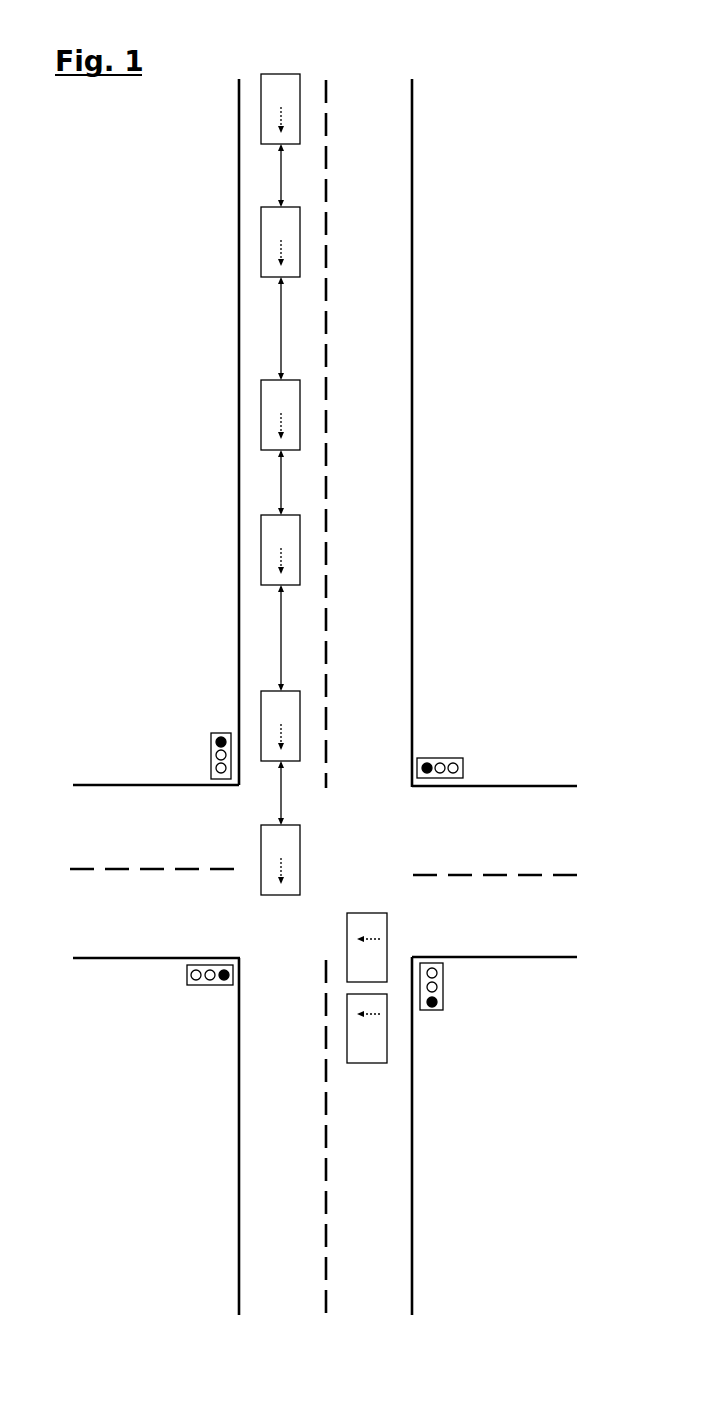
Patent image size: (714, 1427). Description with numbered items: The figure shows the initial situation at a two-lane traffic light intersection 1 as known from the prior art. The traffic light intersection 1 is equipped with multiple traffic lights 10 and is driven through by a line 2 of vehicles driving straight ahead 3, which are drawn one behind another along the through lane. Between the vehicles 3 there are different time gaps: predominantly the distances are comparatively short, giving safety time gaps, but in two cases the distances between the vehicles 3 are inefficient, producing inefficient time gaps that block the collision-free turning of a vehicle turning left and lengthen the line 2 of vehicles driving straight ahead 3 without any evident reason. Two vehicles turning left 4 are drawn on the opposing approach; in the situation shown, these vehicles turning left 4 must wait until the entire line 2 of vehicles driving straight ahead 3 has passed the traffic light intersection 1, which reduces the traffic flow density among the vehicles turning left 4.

The traffic light intersection 1 is at (482, 702).
The line of vehicles driving straight ahead 2 is at (283, 62).
The vehicles driving straight ahead 3 is at (280, 484).
The vehicles turning left 4 is at (367, 988).
The traffic lights 10 is at (208, 758).